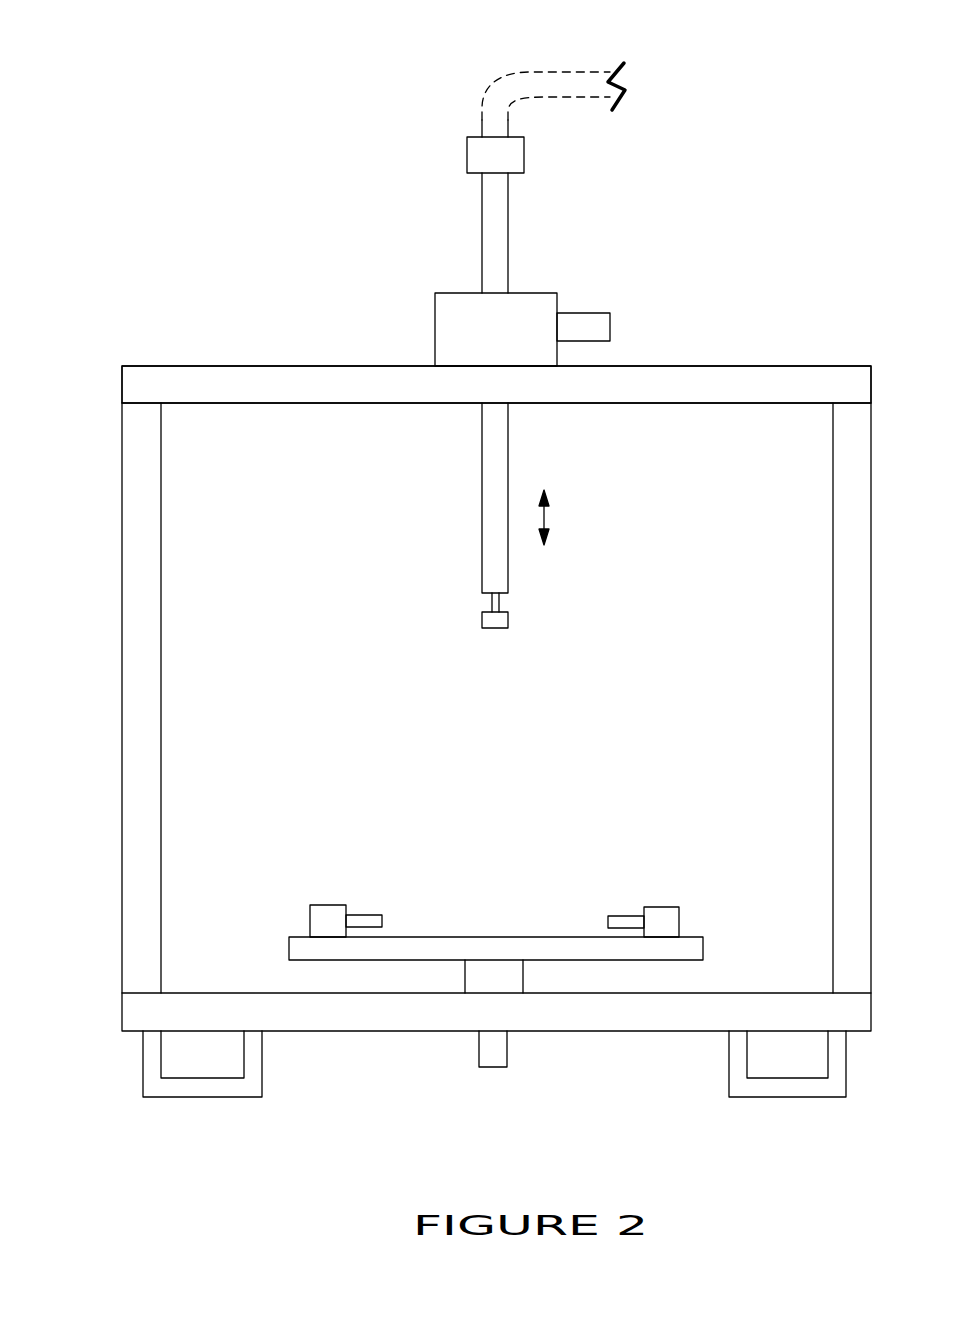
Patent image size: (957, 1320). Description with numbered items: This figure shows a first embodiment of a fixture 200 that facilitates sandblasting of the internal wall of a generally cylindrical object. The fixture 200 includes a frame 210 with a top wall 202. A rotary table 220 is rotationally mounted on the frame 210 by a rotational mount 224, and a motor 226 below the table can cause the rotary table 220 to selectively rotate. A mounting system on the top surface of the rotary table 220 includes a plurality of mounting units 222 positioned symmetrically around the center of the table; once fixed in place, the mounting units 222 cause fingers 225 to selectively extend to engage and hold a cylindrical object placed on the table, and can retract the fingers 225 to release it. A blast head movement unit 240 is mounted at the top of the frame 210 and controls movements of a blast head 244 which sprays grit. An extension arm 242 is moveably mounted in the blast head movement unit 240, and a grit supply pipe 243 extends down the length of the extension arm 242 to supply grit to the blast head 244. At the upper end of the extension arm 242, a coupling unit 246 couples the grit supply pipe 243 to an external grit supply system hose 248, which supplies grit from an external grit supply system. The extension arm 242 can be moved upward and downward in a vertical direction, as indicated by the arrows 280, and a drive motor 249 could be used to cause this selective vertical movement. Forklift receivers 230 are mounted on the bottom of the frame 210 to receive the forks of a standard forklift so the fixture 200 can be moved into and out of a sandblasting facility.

The fixture 200 is at (264, 310).
The top wall 202 is at (762, 378).
The frame 210 is at (140, 481).
The rotary table 220 is at (426, 945).
The mounting units 222 is at (326, 920).
The rotational mount 224 is at (510, 978).
The fingers 225 is at (366, 912).
The motor 226 is at (497, 1050).
The forklift receivers 230 is at (187, 1090).
The blast head movement unit 240 is at (462, 307).
The extension arm 242 is at (488, 490).
The grit supply pipe 243 is at (487, 603).
The blast head 244 is at (482, 620).
The coupling unit 246 is at (470, 157).
The grit supply system hose 248 is at (532, 68).
The drive motor 249 is at (582, 320).
The arrows 280 is at (549, 513).